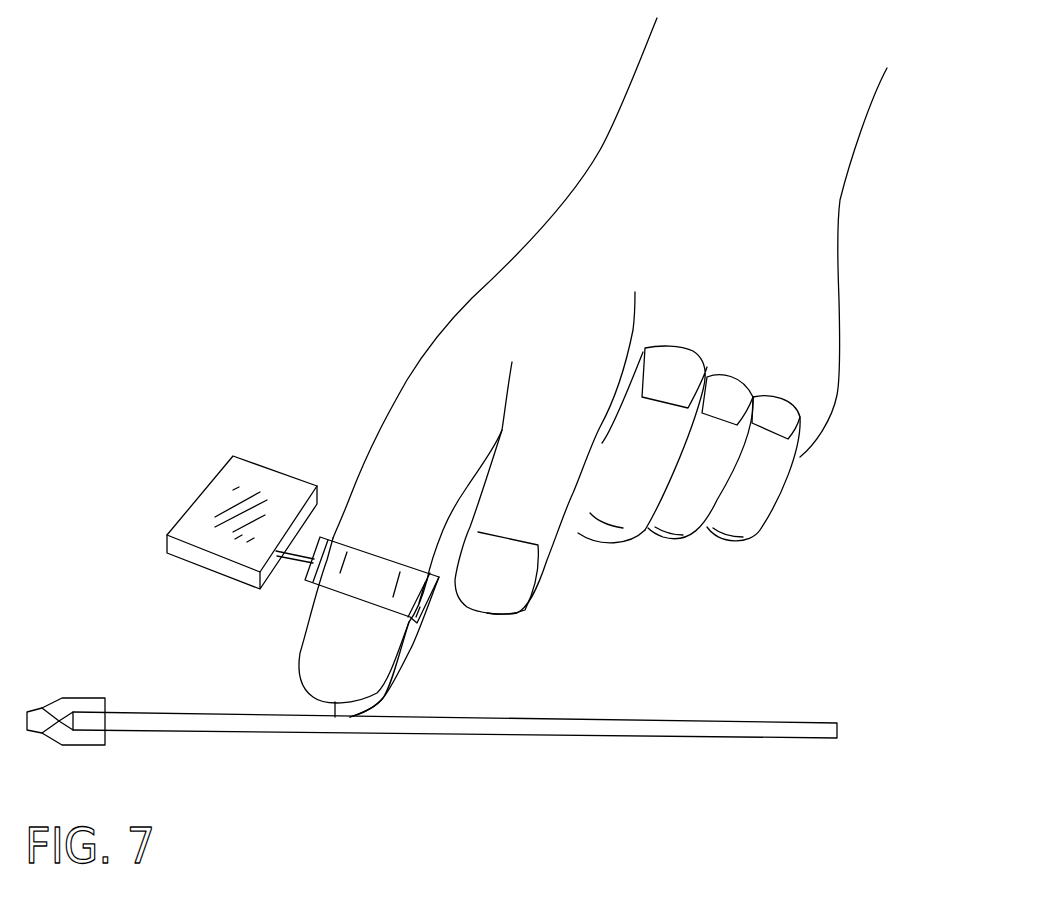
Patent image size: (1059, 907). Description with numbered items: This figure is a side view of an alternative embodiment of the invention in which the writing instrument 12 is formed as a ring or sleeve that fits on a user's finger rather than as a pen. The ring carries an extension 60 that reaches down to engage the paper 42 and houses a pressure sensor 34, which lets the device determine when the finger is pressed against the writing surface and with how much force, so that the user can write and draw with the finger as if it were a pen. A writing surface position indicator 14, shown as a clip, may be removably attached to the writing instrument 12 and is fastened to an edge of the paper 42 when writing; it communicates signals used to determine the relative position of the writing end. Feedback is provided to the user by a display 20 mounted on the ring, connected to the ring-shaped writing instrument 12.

The writing instrument 12 is at (380, 588).
The writing surface position indicator 14 is at (67, 695).
The display 20 is at (200, 503).
The pressure sensor 34 is at (350, 717).
The paper 42 is at (643, 720).
The extension 60 is at (411, 668).